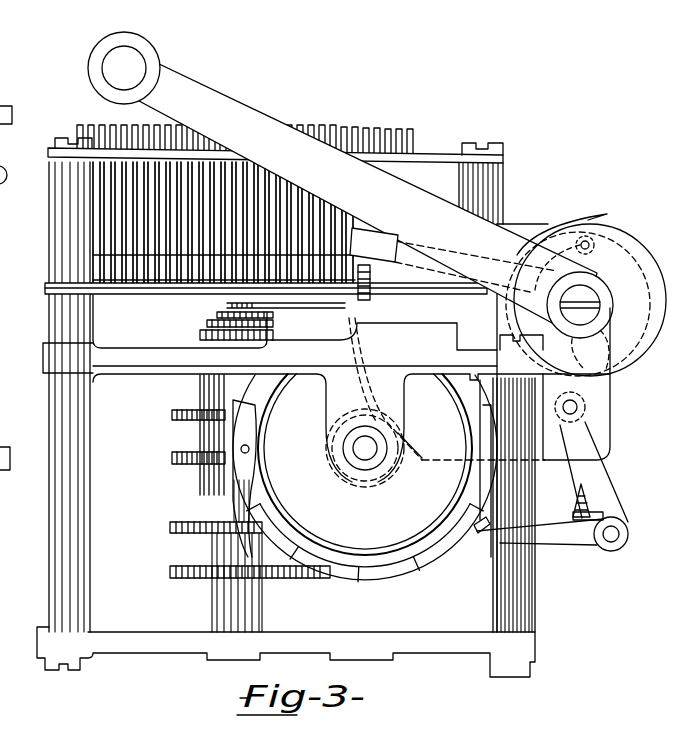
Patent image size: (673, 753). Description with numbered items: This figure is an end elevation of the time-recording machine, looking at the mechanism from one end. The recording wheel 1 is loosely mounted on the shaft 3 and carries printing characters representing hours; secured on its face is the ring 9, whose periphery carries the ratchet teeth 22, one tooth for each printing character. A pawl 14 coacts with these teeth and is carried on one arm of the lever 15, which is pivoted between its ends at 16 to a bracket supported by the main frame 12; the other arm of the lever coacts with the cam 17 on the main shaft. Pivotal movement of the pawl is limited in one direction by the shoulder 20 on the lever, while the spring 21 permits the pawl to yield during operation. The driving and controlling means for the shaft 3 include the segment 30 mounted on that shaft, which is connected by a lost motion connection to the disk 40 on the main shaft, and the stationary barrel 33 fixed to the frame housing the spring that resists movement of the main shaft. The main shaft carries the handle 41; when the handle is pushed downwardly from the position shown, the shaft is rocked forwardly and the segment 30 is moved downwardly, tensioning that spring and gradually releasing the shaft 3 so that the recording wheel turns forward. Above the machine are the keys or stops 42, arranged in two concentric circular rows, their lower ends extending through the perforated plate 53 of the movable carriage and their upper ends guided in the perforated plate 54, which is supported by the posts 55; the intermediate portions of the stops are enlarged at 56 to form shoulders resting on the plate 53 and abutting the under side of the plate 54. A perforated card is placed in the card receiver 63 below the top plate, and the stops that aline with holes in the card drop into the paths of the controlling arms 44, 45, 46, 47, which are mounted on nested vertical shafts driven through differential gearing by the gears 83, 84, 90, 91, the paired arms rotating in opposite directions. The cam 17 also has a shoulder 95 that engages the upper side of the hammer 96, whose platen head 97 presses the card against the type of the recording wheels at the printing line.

The recording wheel 1 is at (455, 560).
The shaft 3 is at (365, 464).
The ring 9 is at (403, 575).
The main frame 12 is at (70, 387).
The pawl 14 is at (548, 540).
The lever 15 is at (612, 384).
The pivot 16 is at (590, 411).
The cam 17 is at (552, 235).
The shoulder 20 is at (573, 513).
The spring 21 is at (575, 487).
The ratchet teeth 22 is at (430, 567).
The segment 30 is at (384, 327).
The stationary barrel 33 is at (330, 572).
The disk 40 is at (632, 350).
The handle 41 is at (227, 112).
The stops 42 is at (361, 126).
The controlling arm 44 is at (226, 305).
The controlling arm 45 is at (216, 316).
The controlling arm 46 is at (207, 324).
The controlling arm 47 is at (203, 334).
The perforated plate 53 is at (70, 250).
The perforated plate 54 is at (432, 160).
The posts 55 is at (65, 197).
The enlarged portions 56 is at (100, 218).
The card receiver 63 is at (48, 290).
The gear 83 is at (170, 572).
The gear 84 is at (170, 527).
The gear 90 is at (172, 459).
The gear 91 is at (172, 416).
The shoulder 95 is at (595, 240).
The hammer 96 is at (462, 250).
The platen head 97 is at (374, 264).